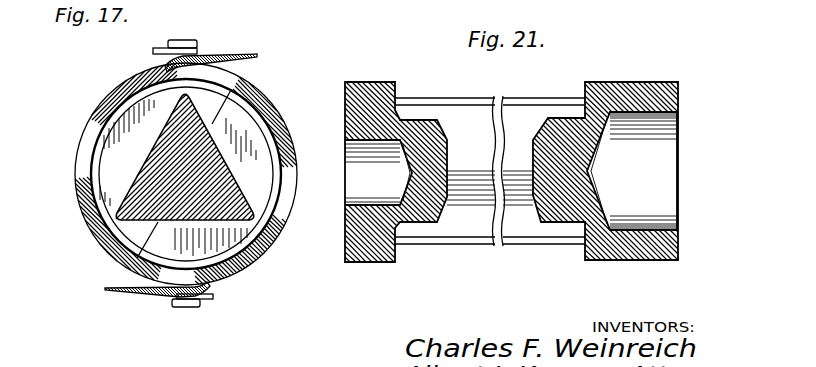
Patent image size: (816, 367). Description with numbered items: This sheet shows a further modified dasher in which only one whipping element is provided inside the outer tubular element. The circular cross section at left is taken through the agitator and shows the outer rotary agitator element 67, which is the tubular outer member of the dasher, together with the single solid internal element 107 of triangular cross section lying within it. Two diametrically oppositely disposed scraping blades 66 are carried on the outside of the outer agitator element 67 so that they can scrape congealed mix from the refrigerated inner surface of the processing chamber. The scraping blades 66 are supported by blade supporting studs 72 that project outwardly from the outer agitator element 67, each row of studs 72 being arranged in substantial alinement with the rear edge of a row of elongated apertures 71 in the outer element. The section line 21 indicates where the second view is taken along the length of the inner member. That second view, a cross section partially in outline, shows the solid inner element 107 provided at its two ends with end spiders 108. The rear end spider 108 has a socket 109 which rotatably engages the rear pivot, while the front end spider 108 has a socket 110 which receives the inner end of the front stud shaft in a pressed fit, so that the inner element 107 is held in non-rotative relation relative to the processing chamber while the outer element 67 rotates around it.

In FIG. 17, the section line 21 is at (224, 110).
In FIG. 17, the scraping blades 66 is at (226, 49).
In FIG. 17, the outer rotary agitator element 67 is at (116, 72).
In FIG. 17, the elongated apertures 71 is at (183, 40).
In FIG. 17, the blade supporting studs 72 is at (184, 308).
In FIG. 17, the internal element 107 is at (142, 182).
In FIG. 21, the internal element 107 is at (508, 103).
In FIG. 17, the end spiders 108 is at (118, 136).
In FIG. 21, the end spiders 108 is at (364, 92).
In FIG. 21, the socket 109 is at (666, 180).
In FIG. 21, the socket 110 is at (358, 194).